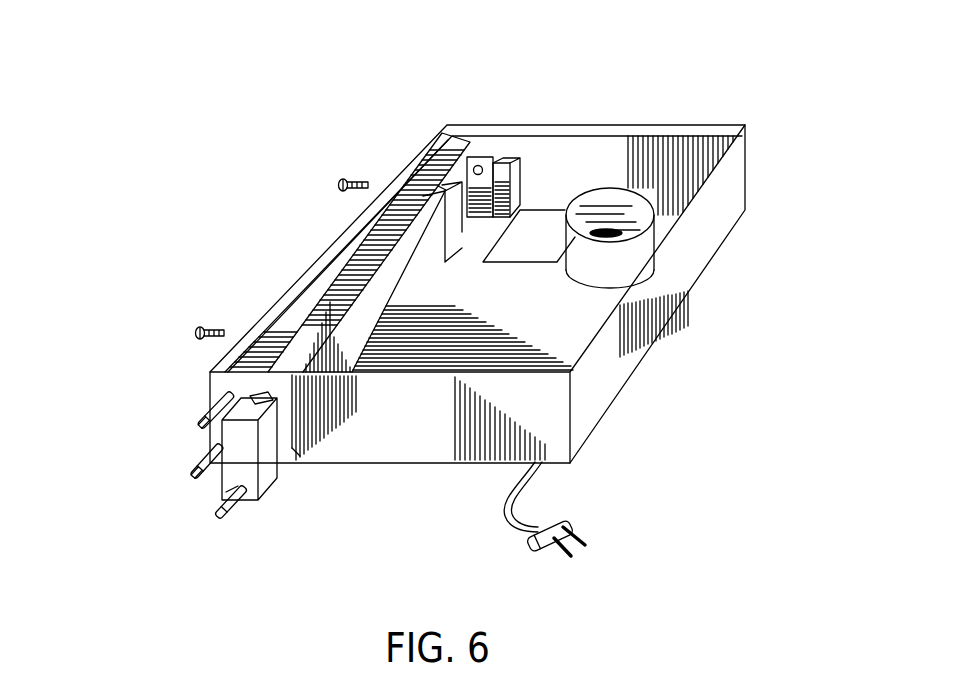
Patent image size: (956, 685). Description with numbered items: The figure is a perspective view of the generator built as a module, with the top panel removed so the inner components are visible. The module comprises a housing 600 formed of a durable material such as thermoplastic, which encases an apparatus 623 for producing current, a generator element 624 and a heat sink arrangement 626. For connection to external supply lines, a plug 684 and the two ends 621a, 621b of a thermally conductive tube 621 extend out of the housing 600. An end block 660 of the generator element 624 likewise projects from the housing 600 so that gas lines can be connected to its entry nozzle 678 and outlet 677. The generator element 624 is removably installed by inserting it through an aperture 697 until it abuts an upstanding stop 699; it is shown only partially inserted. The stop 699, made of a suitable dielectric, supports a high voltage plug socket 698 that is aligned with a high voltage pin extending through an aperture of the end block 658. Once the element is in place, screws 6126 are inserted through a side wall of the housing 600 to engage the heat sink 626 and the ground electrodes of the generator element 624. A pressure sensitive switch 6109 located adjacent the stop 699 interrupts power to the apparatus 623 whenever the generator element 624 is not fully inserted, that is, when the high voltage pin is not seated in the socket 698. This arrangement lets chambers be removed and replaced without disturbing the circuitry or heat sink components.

The housing 600 is at (640, 350).
The generator element 624 is at (366, 278).
The heat sink arrangement 626 is at (316, 294).
The end block 658 is at (443, 187).
The high voltage plug socket 698 is at (480, 165).
The upstanding stop 699 is at (494, 160).
The pressure sensitive switch 6109 is at (522, 160).
The apparatus for producing current 623 is at (650, 225).
The screws 6126 is at (339, 183).
The end block 660 is at (263, 474).
The aperture 697 is at (293, 448).
The thermally conductive tube 621 is at (213, 397).
The end of thermally conductive tube 621a is at (203, 413).
The end of thermally conductive tube 621b is at (193, 467).
The entry nozzle 678 is at (247, 400).
The outlet 677 is at (232, 516).
The plug 684 is at (562, 523).